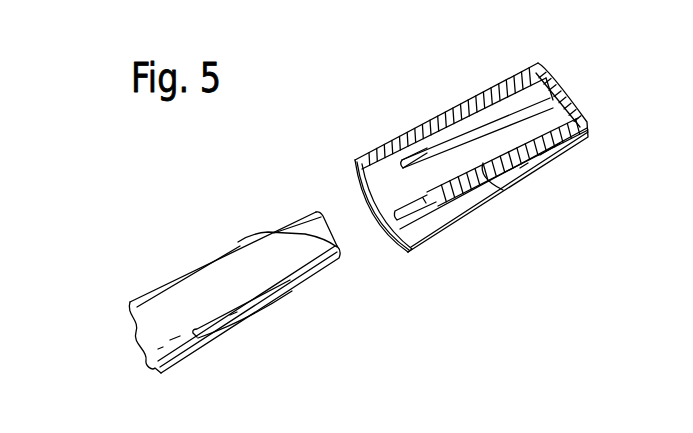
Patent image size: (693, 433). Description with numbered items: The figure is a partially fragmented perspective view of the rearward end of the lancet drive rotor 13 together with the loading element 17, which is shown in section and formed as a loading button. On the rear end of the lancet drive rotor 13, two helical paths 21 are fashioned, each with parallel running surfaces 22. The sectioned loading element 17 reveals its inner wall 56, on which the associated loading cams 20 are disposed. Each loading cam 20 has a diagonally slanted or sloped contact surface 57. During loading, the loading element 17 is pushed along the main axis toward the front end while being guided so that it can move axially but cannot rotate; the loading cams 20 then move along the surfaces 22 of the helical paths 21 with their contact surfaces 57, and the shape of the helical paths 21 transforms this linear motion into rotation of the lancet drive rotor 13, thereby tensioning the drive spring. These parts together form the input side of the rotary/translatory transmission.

The lancet drive rotor 13 is at (181, 285).
The loading element 17 is at (577, 156).
The loading cam 20 is at (437, 137).
The helical path 21 is at (270, 233).
The surface 22 is at (323, 227).
The inner wall 56 is at (374, 181).
The contact surface 57 is at (421, 138).